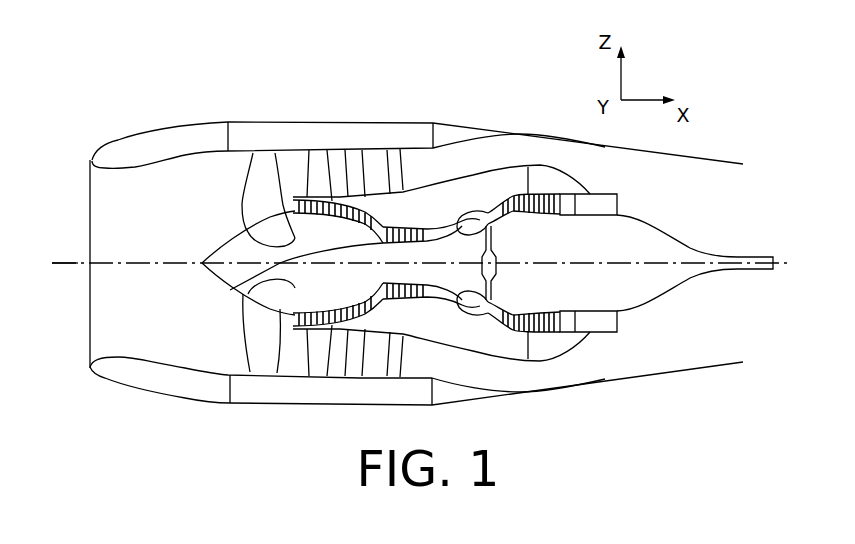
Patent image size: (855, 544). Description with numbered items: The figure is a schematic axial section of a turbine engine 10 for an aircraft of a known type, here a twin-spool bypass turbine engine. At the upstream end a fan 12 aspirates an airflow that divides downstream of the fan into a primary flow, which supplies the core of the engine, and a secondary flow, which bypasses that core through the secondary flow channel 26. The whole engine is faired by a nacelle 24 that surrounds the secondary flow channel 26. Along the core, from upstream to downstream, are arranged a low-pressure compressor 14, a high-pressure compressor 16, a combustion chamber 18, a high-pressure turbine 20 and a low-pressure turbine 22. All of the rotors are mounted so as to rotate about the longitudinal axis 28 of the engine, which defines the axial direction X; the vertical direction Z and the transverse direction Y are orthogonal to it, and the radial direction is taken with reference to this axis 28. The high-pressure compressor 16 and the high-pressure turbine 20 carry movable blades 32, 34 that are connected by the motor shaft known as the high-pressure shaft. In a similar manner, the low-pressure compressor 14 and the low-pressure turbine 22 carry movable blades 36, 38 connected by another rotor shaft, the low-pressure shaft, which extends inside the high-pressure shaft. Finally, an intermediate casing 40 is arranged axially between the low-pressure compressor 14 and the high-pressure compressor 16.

The turbine engine 10 is at (228, 82).
The fan 12 is at (260, 333).
The low-pressure compressor 14 is at (309, 188).
The high-pressure compressor 16 is at (408, 212).
The combustion chamber 18 is at (459, 205).
The high-pressure turbine 20 is at (486, 200).
The low-pressure turbine 22 is at (538, 183).
The nacelle 24 is at (352, 122).
The secondary flow channel 26 is at (303, 363).
The longitudinal axis 28 is at (70, 262).
The movable blades of the high-pressure compressor 32 is at (230, 290).
The movable blades of the high-pressure turbine 34 is at (497, 213).
The movable blades of the low-pressure compressor 36 is at (245, 236).
The movable blades of the low-pressure turbine 38 is at (548, 213).
The intermediate casing 40 is at (398, 352).